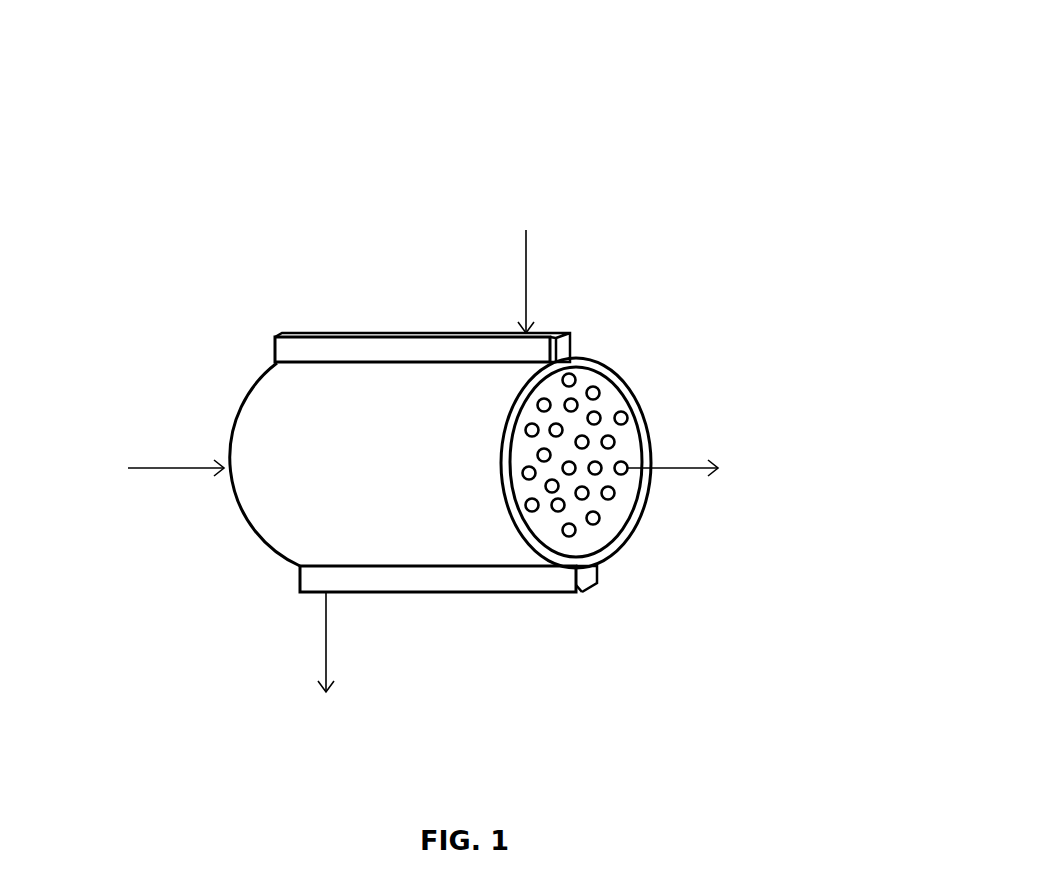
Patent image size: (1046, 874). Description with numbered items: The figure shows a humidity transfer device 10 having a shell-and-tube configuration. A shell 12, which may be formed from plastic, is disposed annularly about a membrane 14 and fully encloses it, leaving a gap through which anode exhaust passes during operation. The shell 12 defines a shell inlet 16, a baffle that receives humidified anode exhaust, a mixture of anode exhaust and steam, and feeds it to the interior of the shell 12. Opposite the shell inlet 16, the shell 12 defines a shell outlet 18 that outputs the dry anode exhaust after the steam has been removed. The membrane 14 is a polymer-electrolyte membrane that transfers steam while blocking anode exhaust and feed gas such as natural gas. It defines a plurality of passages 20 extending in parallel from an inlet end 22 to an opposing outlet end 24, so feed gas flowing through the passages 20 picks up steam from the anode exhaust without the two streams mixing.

The humidity transfer device 10 is at (622, 108).
The shell 12 is at (276, 418).
The membrane 14 is at (588, 380).
The shell inlet 16 is at (408, 332).
The shell outlet 18 is at (387, 593).
The passage 20 is at (574, 467).
The inlet end 22 is at (233, 430).
The outlet end 24 is at (632, 540).